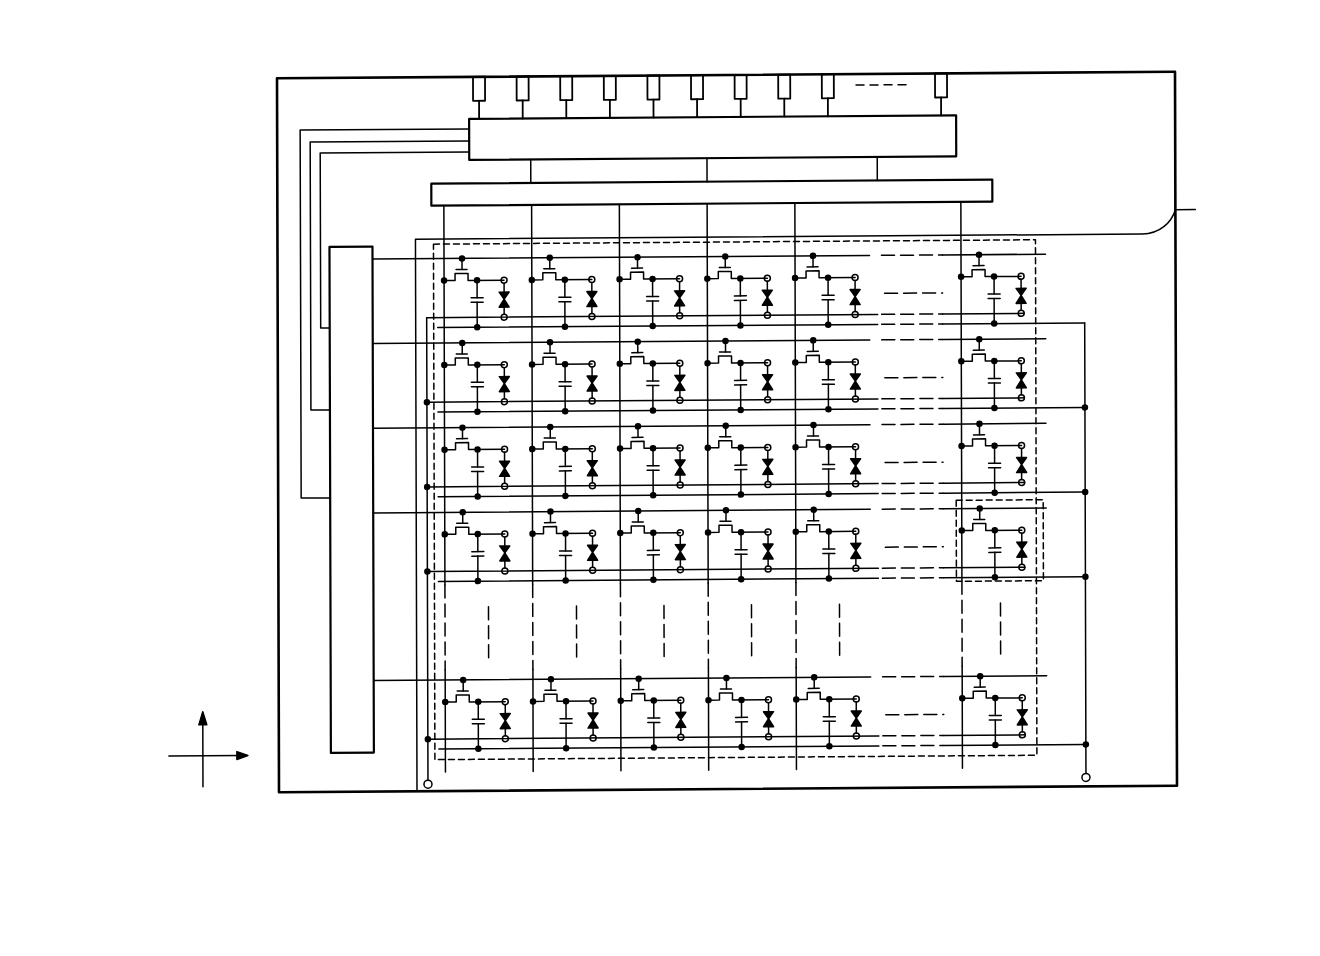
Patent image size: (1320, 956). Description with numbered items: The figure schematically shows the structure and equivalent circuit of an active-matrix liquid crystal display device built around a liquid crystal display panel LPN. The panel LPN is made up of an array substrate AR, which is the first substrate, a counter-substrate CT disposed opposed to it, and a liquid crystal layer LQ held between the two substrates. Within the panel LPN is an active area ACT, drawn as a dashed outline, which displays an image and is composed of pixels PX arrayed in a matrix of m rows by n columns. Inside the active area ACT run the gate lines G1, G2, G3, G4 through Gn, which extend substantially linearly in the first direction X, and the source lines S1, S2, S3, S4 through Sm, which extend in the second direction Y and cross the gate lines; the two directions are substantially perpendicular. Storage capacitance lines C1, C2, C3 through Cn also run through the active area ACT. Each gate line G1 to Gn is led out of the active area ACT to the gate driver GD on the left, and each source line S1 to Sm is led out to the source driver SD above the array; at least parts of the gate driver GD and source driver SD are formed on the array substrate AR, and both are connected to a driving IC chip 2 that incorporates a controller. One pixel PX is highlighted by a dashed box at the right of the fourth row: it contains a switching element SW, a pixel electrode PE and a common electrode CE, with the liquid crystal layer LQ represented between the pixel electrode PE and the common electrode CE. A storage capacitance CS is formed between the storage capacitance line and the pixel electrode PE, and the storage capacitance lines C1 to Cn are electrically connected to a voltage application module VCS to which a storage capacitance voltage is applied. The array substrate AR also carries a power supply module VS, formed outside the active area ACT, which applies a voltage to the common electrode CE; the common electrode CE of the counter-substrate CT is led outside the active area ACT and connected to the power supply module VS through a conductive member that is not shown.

The liquid crystal display panel LPN is at (1214, 90).
The array substrate AR is at (346, 780).
The driving IC chip 2 is at (956, 117).
The source driver SD is at (993, 188).
The gate driver GD is at (330, 615).
The counter-substrate CT is at (822, 496).
The active area ACT is at (1037, 355).
The gate line G1 is at (395, 255).
The gate line G2 is at (395, 340).
The gate line G3 is at (395, 425).
The gate line G4 is at (395, 510).
The gate line Gn is at (395, 677).
The source line S1 is at (448, 221).
The source line S2 is at (535, 221).
The source line S3 is at (623, 221).
The source line S4 is at (710, 221).
The source line Sm is at (964, 222).
The storage capacitance line C1 is at (1060, 325).
The storage capacitance line C2 is at (1060, 410).
The storage capacitance line C3 is at (1060, 494).
The storage capacitance line Cn is at (1060, 747).
The pixel PX is at (1040, 593).
The switching element SW is at (950, 522).
The storage capacitance CS is at (972, 553).
The pixel electrode PE is at (1025, 531).
The liquid crystal layer LQ is at (1028, 548).
The common electrode CE is at (1025, 568).
The power supply module VS is at (430, 788).
The voltage application module VCS is at (1090, 777).